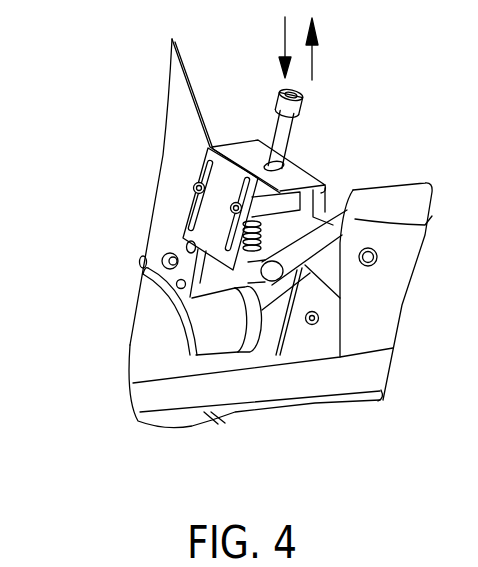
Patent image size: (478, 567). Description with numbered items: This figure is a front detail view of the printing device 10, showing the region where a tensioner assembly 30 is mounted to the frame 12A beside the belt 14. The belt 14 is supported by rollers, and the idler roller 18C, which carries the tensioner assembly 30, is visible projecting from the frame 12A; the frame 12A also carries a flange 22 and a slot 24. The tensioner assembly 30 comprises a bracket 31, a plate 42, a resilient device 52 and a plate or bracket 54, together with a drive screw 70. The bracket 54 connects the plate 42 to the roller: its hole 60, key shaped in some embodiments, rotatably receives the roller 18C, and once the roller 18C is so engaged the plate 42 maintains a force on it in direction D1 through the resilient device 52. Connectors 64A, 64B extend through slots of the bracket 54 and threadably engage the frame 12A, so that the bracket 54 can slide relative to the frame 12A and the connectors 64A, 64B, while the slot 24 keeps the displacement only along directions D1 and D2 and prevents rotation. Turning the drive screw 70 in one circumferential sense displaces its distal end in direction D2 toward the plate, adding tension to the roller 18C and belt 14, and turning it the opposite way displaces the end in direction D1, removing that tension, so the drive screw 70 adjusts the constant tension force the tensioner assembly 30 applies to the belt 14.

The printing device 10 is at (126, 102).
The frame 12A is at (182, 118).
The belt 14 is at (147, 365).
The idler roller 18C is at (187, 328).
The flange 22 is at (222, 315).
The slot 24 is at (161, 244).
The tensioner assembly 30 is at (382, 90).
The bracket 31 is at (217, 203).
The plate 42 is at (282, 210).
The resilient device 52 is at (322, 298).
The bracket 54 is at (327, 183).
The hole 60 is at (261, 371).
The connector 64A is at (318, 322).
The connector 64B is at (230, 268).
The drive screw 70 is at (282, 137).
The direction D1 is at (316, 58).
The direction D2 is at (283, 28).